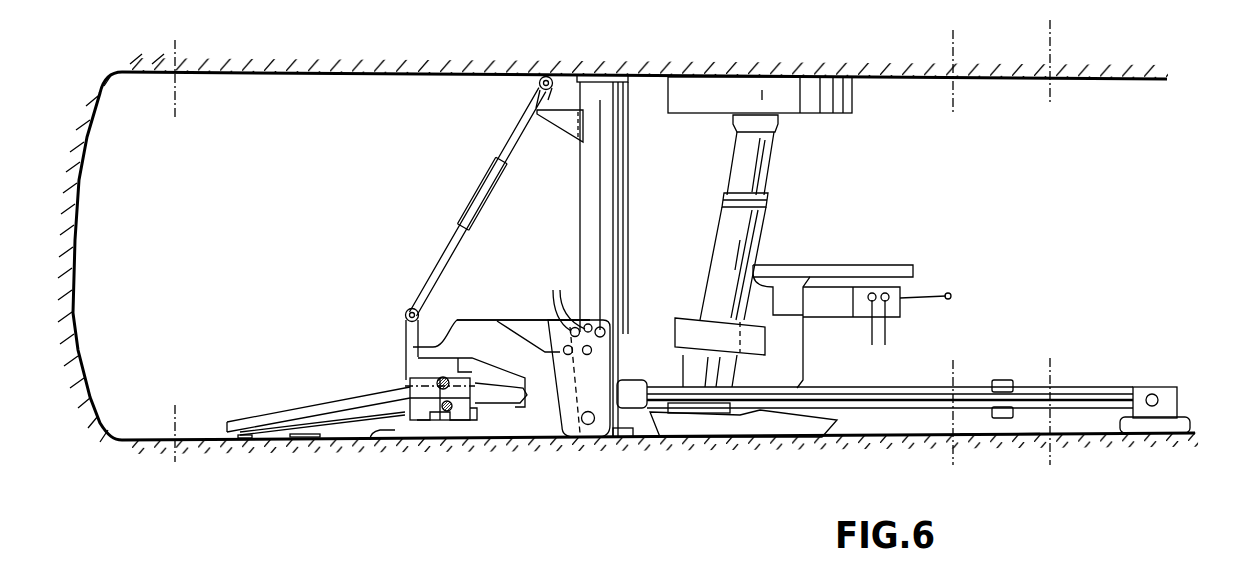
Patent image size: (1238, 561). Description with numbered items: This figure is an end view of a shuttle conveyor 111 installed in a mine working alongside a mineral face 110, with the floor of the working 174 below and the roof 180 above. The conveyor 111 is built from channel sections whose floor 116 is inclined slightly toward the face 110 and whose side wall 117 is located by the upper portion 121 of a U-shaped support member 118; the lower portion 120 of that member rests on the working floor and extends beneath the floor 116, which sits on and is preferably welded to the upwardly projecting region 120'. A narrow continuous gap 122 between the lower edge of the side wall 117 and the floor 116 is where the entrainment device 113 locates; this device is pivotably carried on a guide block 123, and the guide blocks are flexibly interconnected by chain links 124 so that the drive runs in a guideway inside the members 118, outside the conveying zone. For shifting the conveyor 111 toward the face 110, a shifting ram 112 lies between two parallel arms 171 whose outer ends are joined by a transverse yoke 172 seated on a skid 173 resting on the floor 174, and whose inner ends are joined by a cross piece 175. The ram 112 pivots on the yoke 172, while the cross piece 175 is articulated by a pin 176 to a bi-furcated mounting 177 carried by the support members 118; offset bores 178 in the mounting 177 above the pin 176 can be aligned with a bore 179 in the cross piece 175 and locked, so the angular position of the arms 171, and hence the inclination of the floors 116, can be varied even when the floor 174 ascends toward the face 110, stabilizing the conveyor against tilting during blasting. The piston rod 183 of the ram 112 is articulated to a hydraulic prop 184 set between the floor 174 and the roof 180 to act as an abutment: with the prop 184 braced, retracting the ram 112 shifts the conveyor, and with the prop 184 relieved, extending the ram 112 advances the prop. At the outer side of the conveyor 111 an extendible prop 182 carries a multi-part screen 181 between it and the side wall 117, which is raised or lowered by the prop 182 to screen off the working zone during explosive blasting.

The mineral face 110 is at (78, 245).
The shuttle conveyor 111 is at (360, 251).
The shifting ram 112 is at (1077, 386).
The entrainment device 113 is at (298, 412).
The floor 116 is at (337, 424).
The side wall 117 is at (405, 330).
The U-shaped support member 118 is at (523, 320).
The lower portion 120 is at (463, 454).
The upwardly projecting region 120' is at (370, 469).
The upper portion 121 is at (435, 337).
The gap 122 is at (403, 380).
The guide block 123 is at (430, 398).
The chain link 124 is at (446, 412).
The arm 171 is at (972, 397).
The transverse yoke 172 is at (1170, 390).
The skid 173 is at (1150, 427).
The floor of the working 174 is at (998, 435).
The cross piece 175 is at (620, 427).
The pin 176 is at (584, 430).
The bi-furcated mounting 177 is at (598, 367).
The offset bores 178 is at (562, 298).
The bore 179 is at (607, 313).
The roof 180 is at (1003, 82).
The multi-part screen 181 is at (487, 188).
The extendible prop 182 is at (590, 195).
The piston rod 183 is at (912, 385).
The hydraulic prop 184 is at (750, 225).